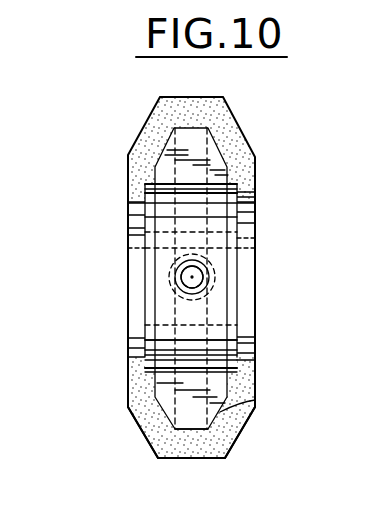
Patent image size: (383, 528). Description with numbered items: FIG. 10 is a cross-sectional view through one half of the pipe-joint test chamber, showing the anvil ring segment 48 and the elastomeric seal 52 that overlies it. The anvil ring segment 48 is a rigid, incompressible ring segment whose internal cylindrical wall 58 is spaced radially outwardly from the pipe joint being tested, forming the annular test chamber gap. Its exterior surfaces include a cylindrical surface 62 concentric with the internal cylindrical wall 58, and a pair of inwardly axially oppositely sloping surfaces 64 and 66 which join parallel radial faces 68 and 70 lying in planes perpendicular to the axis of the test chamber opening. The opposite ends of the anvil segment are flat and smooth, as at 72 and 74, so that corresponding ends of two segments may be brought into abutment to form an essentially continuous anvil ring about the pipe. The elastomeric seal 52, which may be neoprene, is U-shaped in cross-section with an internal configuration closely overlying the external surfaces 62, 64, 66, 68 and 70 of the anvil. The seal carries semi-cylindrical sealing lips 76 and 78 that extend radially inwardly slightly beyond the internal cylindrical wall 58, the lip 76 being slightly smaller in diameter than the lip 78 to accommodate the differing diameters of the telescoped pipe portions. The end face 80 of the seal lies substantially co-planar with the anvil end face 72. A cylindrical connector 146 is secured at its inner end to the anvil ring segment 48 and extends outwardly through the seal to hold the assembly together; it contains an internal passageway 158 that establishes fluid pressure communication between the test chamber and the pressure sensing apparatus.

The elastomeric seal 52 is at (140, 133).
The end face of elastomeric seal segment 80 is at (205, 103).
The end of anvil ring segment 72 is at (192, 140).
The sealing lip 76 is at (137, 208).
The sealing lip 78 is at (244, 200).
The connector 146 is at (210, 276).
The internal passageway 158 is at (183, 283).
The internal cylindrical wall 58 is at (167, 370).
The radial face 68 is at (155, 378).
The radial face 70 is at (225, 385).
The anvil ring segment 48 is at (172, 399).
The sloping surface 66 is at (230, 447).
The sloping surface 64 is at (170, 417).
The end of anvil ring segment 74 is at (205, 418).
The cylindrical surface 62 is at (197, 430).